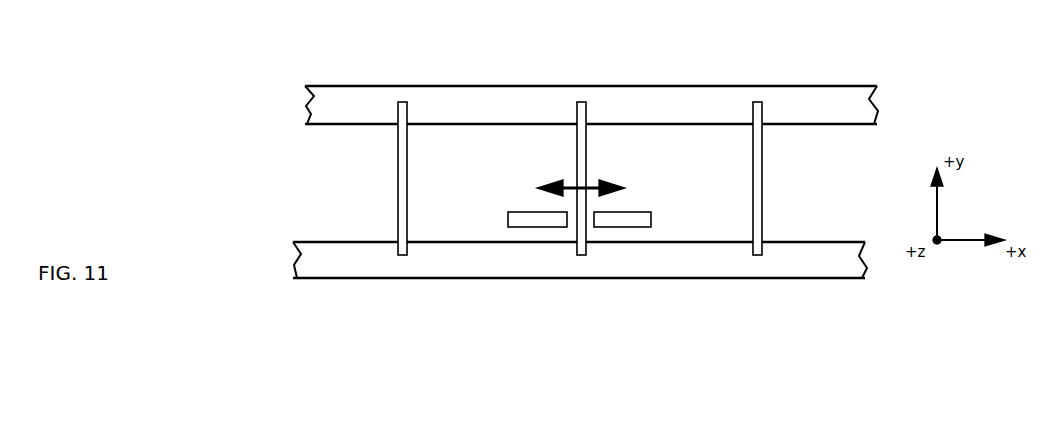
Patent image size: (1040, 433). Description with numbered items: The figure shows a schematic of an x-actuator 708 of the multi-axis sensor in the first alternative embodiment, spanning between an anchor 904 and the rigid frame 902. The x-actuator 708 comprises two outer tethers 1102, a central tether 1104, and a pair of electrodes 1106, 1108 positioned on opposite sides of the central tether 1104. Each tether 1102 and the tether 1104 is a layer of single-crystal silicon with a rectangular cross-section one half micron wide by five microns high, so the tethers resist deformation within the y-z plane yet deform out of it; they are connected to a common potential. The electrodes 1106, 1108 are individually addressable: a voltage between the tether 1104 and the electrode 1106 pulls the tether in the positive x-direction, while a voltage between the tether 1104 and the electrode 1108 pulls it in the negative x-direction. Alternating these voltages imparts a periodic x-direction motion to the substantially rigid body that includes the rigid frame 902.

The x-actuator 708 is at (219, 100).
The anchor 904 is at (362, 116).
The rigid frame 902 is at (355, 268).
The tether 1102 is at (402, 197).
The tether 1104 is at (580, 170).
The electrode 1106 is at (651, 216).
The electrode 1108 is at (508, 220).